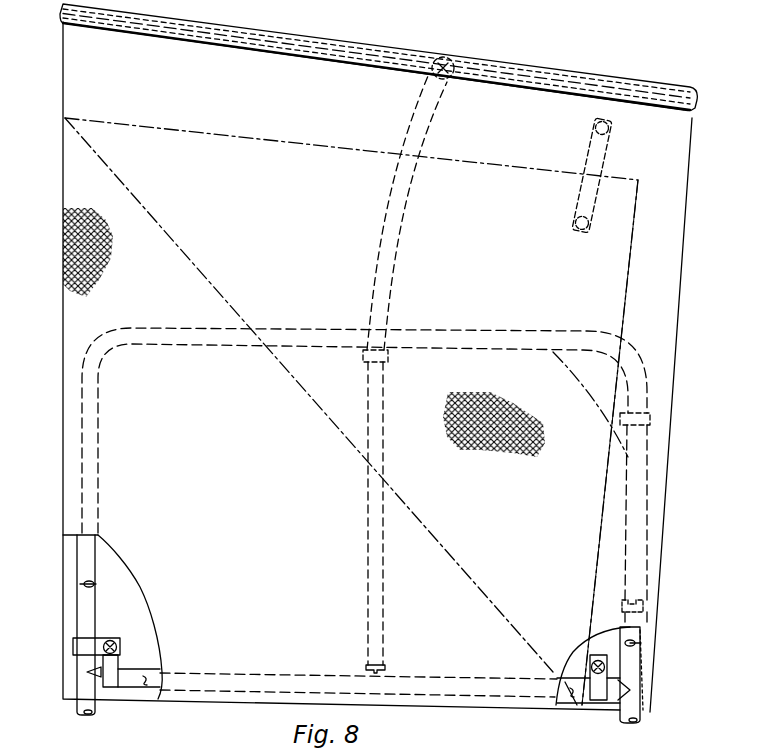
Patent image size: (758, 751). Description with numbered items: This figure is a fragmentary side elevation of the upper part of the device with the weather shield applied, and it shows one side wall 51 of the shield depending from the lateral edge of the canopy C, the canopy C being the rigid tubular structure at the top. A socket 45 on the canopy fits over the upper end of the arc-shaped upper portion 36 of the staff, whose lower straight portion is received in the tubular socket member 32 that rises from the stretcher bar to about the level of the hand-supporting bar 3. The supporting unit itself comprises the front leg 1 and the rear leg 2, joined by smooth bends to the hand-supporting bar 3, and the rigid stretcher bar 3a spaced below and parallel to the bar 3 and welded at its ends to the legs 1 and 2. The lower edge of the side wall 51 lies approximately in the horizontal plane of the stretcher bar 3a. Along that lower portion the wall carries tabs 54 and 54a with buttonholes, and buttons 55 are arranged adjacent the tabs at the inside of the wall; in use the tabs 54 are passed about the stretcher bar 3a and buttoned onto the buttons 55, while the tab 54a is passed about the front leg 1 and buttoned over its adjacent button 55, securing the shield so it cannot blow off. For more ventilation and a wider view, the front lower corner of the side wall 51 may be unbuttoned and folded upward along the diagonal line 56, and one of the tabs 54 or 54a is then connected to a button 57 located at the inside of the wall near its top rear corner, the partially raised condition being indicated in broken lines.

The front leg 1 is at (82, 615).
The rear leg 2 is at (640, 715).
The hand-supporting bar 3 is at (644, 461).
The stretcher bar 3a is at (234, 682).
The tubular socket member 32 is at (385, 620).
The upper portion of staff 36 is at (387, 241).
The socket 45 is at (447, 82).
The side wall 51 is at (670, 296).
The tab 54 is at (120, 664).
The tab 54a is at (100, 637).
The button 55 is at (118, 638).
The diagonal line 56 is at (185, 247).
The button 57 is at (609, 130).
The canopy C is at (611, 65).